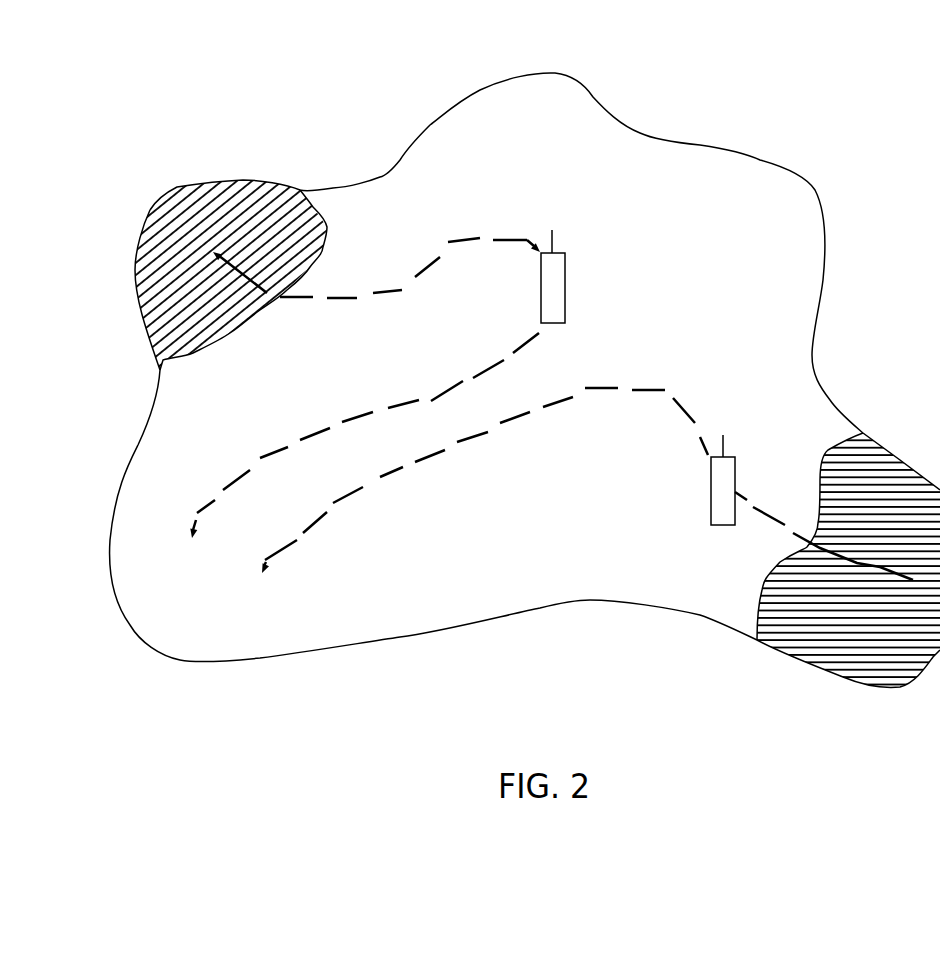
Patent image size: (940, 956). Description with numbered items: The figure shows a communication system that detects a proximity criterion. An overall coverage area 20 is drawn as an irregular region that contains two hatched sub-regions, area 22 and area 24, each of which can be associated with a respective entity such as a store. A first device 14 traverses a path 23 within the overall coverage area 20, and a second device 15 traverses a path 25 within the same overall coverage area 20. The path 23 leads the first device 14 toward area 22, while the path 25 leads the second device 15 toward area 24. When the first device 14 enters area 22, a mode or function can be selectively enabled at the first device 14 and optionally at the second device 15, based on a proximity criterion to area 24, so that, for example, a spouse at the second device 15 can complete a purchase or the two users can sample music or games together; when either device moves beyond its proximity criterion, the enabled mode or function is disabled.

The overall coverage area 20 is at (572, 729).
The area 22 is at (864, 624).
The path 23 is at (643, 387).
The area 24 is at (183, 309).
The path 25 is at (477, 238).
The first device 14 is at (712, 515).
The second device 15 is at (543, 308).